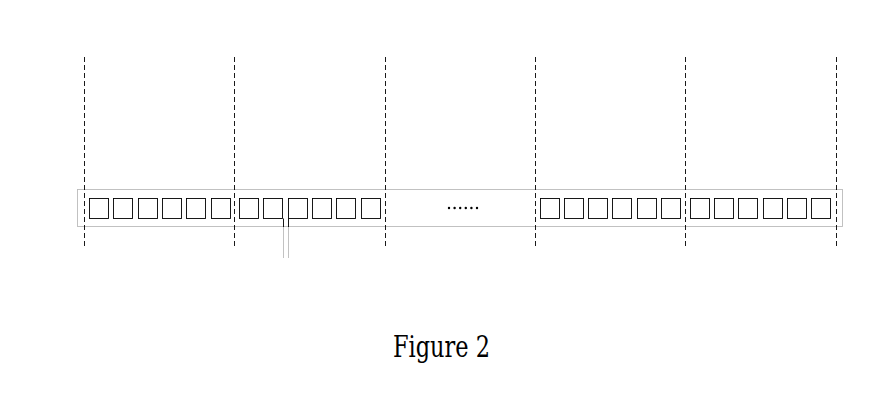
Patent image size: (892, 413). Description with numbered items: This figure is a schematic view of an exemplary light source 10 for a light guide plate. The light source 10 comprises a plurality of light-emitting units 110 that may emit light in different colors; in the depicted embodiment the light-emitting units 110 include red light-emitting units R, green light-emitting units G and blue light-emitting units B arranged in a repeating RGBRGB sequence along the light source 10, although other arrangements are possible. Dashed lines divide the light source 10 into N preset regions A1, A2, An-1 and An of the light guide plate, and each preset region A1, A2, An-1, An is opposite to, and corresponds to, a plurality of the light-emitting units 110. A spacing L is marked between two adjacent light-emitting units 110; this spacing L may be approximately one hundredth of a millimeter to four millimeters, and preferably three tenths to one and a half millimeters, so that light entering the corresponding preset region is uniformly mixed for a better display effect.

The light source 10 is at (437, 165).
The light-emitting unit 110 is at (99, 218).
The preset region A1 is at (160, 165).
The preset region A2 is at (313, 152).
The preset region An-1 is at (611, 152).
The preset region An is at (764, 152).
The spacing L is at (307, 240).